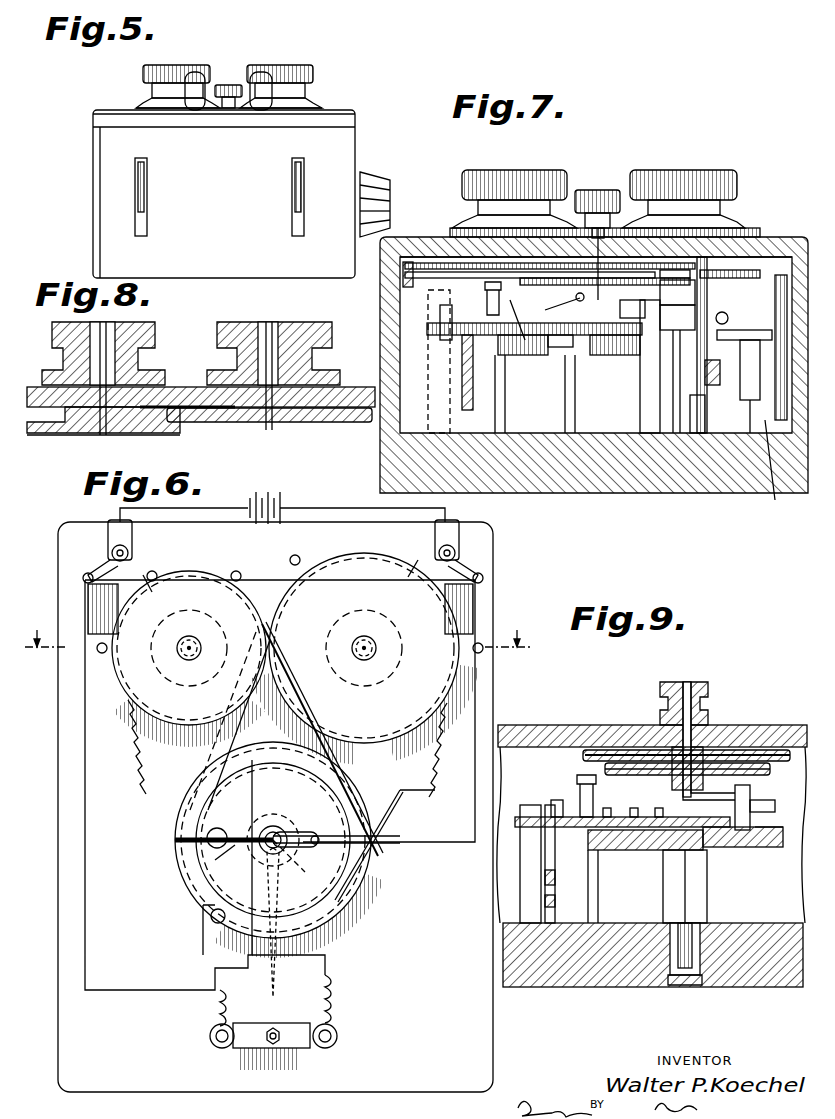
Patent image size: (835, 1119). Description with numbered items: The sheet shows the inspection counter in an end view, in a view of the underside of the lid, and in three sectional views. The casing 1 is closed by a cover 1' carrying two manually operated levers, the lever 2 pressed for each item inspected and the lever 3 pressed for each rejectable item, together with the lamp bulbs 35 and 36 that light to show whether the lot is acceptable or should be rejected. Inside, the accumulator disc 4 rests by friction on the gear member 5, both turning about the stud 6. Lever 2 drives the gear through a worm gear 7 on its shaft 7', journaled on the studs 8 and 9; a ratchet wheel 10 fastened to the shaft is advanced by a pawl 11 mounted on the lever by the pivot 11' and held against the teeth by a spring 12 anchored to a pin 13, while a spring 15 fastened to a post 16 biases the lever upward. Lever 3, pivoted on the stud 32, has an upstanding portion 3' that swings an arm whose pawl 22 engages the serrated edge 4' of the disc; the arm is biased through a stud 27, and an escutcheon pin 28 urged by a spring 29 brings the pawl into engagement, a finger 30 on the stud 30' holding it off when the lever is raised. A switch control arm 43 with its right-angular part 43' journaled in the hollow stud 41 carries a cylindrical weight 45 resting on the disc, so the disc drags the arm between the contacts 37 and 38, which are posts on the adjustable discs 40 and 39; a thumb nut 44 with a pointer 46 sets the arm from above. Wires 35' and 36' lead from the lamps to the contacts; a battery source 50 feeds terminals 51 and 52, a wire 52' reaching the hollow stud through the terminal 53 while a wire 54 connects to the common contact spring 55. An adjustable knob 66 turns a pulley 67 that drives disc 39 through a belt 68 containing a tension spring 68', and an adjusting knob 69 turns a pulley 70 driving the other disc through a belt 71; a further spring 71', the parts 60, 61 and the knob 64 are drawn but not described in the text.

In FIG. 5, the casing 1 is at (205, 194).
In FIG. 7, the casing 1 is at (594, 378).
In FIG. 9, the casing 1 is at (651, 879).
In FIG. 5, the cover 1' is at (246, 117).
In FIG. 8, the cover 1' is at (201, 382).
In FIG. 7, the cover 1' is at (596, 229).
In FIG. 6, the cover 1' is at (304, 633).
In FIG. 9, the cover 1' is at (652, 720).
In FIG. 5, the lever 2 is at (292, 176).
In FIG. 7, the lever 2 is at (690, 395).
In FIG. 5, the lever 3 is at (159, 197).
In FIG. 7, the lever 3 is at (439, 372).
In FIG. 7, the upstanding portion 3' is at (428, 315).
In FIG. 9, the upstanding portion 3' is at (537, 800).
In FIG. 7, the accumulator disc 4 is at (645, 366).
In FIG. 9, the accumulator disc 4 is at (743, 849).
In FIG. 7, the serrated edge 4' is at (517, 315).
In FIG. 9, the serrated edge 4' is at (645, 854).
In FIG. 7, the gear member 5 is at (525, 355).
In FIG. 9, the gear member 5 is at (758, 847).
In FIG. 7, the stud 6 is at (580, 422).
In FIG. 9, the stud 6 is at (700, 885).
In FIG. 7, the worm gear 7 is at (551, 362).
In FIG. 7, the shaft 7' is at (615, 362).
In FIG. 7, the stud 8 is at (553, 402).
In FIG. 6, the stud 8 is at (277, 628).
In FIG. 7, the stud 9 is at (670, 426).
In FIG. 7, the ratchet wheel 10 is at (708, 298).
In FIG. 7, the pawl 11 is at (665, 381).
In FIG. 7, the pivot 11' is at (678, 376).
In FIG. 7, the spring 12 is at (745, 360).
In FIG. 7, the pin 13 is at (763, 407).
In FIG. 7, the spring 15 is at (740, 325).
In FIG. 7, the stud or post 16 is at (737, 319).
In FIG. 7, the pawl 22 is at (455, 336).
In FIG. 9, the pawl 22 is at (560, 825).
In FIG. 9, the stud 27 is at (667, 801).
In FIG. 9, the escutcheon pin 28 is at (640, 801).
In FIG. 9, the spring 29 is at (614, 801).
In FIG. 7, the finger 30 is at (478, 298).
In FIG. 9, the finger 30 is at (568, 796).
In FIG. 9, the stud 30' is at (609, 886).
In FIG. 7, the stud 32 is at (435, 424).
In FIG. 9, the stud 32 is at (530, 878).
In FIG. 5, the lamp bulb 35 is at (208, 70).
In FIG. 6, the lamp bulb 35 is at (341, 1023).
In FIG. 6, the wire 35' is at (350, 995).
In FIG. 5, the lamp bulb 36 is at (272, 70).
In FIG. 6, the lamp bulb 36 is at (196, 1030).
In FIG. 6, the wire 36' is at (192, 1008).
In FIG. 7, the contact 37 is at (668, 270).
In FIG. 6, the contact 37 is at (255, 790).
In FIG. 7, the contact 38 is at (632, 317).
In FIG. 6, the contact 38 is at (211, 912).
In FIG. 7, the adjustable disc 39 is at (660, 278).
In FIG. 6, the adjustable disc 39 is at (345, 898).
In FIG. 9, the adjustable disc 39 is at (630, 750).
In FIG. 7, the adjustable disc 40 is at (530, 272).
In FIG. 6, the adjustable disc 40 is at (205, 800).
In FIG. 9, the adjustable disc 40 is at (750, 750).
In FIG. 6, the hollow stud 41 is at (282, 846).
In FIG. 9, the hollow stud 41 is at (715, 725).
In FIG. 7, the switch control arm 43 is at (680, 317).
In FIG. 6, the switch control arm 43 is at (224, 865).
In FIG. 9, the switch control arm 43 is at (768, 811).
In FIG. 7, the right-angular part 43' is at (630, 222).
In FIG. 9, the right-angular part 43' is at (709, 727).
In FIG. 5, the thumb nut 44 is at (230, 84).
In FIG. 7, the thumb nut 44 is at (598, 190).
In FIG. 6, the thumb nut 44 is at (300, 863).
In FIG. 9, the thumb nut 44 is at (672, 682).
In FIG. 7, the cylindrical weight 45 is at (680, 292).
In FIG. 6, the cylindrical weight 45 is at (220, 828).
In FIG. 9, the cylindrical weight 45 is at (752, 792).
In FIG. 7, the pointer 46 is at (585, 190).
In FIG. 6, the pointer 46 is at (285, 890).
In FIG. 6, the battery source 50 is at (282, 505).
In FIG. 7, the terminal 51 is at (382, 295).
In FIG. 6, the terminal 51 is at (132, 535).
In FIG. 6, the terminal 52 is at (437, 551).
In FIG. 6, the wire 52' is at (429, 788).
In FIG. 7, the terminal 53 is at (562, 308).
In FIG. 6, the terminal 53 is at (308, 832).
In FIG. 6, the wire 54 is at (86, 788).
In FIG. 6, the common contact spring 55 is at (250, 1044).
In FIG. 7, the rack 60 is at (775, 335).
In FIG. 7, the wire 61 is at (771, 469).
In FIG. 5, the knob 64 is at (378, 172).
In FIG. 5, the adjustable knob 66 is at (180, 64).
In FIG. 8, the adjustable knob 66 is at (155, 332).
In FIG. 7, the adjustable knob 66 is at (505, 170).
In FIG. 8, the pulley 67 is at (240, 425).
In FIG. 7, the pulley 67 is at (437, 262).
In FIG. 6, the pulley 67 is at (440, 670).
In FIG. 8, the belt or cord 68 is at (187, 379).
In FIG. 6, the belt or cord 68 is at (329, 762).
In FIG. 9, the belt or cord 68 is at (667, 755).
In FIG. 6, the tension spring 68' is at (440, 750).
In FIG. 5, the adjusting knob 69 is at (302, 64).
In FIG. 8, the adjusting knob 69 is at (245, 330).
In FIG. 7, the adjusting knob 69 is at (700, 170).
In FIG. 8, the pulley 70 is at (60, 435).
In FIG. 7, the pulley 70 is at (740, 270).
In FIG. 6, the pulley 70 is at (128, 667).
In FIG. 8, the belt or cord 71 is at (103, 447).
In FIG. 6, the belt or cord 71 is at (222, 722).
In FIG. 9, the belt or cord 71 is at (660, 772).
In FIG. 6, the spring 71' is at (123, 747).